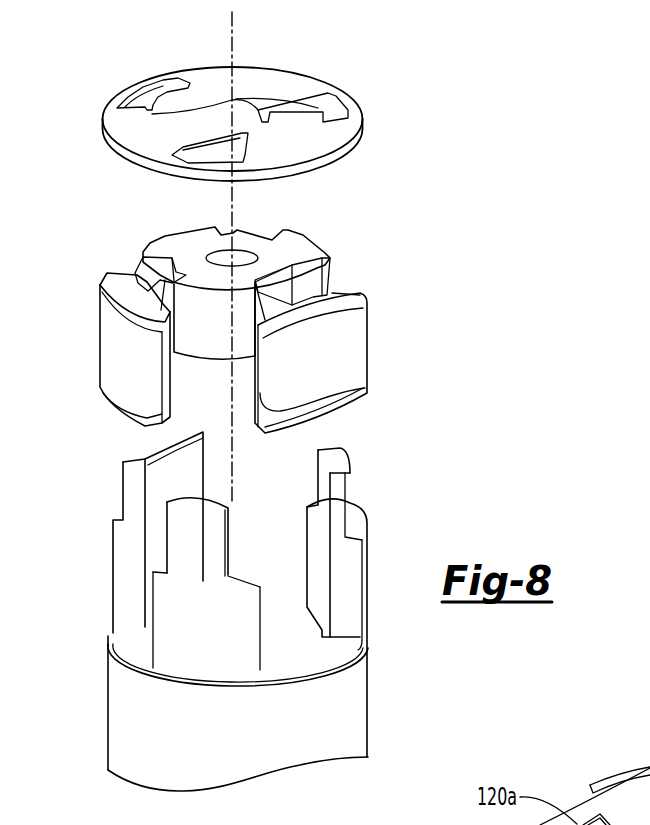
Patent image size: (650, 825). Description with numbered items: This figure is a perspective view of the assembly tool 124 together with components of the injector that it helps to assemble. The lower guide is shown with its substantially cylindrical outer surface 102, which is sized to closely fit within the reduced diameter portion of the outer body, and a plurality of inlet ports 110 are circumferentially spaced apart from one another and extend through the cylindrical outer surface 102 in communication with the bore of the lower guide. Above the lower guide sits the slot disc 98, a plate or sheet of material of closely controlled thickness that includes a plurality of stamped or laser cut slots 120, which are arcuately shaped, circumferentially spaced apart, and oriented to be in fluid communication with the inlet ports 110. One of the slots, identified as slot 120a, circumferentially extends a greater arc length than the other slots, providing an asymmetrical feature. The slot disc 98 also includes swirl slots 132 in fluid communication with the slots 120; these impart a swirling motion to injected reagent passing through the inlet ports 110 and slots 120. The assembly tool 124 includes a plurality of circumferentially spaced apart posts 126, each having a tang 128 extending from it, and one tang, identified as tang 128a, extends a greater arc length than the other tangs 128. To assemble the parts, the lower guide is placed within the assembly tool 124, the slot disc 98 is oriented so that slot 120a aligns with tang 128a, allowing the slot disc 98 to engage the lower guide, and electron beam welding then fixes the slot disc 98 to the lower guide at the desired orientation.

The slot disc 98 is at (372, 127).
The slots 120 is at (337, 100).
The slot 120a is at (138, 100).
The swirl slots 132 is at (236, 133).
The cylindrical outer surface 102 is at (372, 317).
The inlet ports 110 is at (365, 388).
The posts 126 is at (372, 519).
The tangs 128 is at (350, 487).
The tang 128a is at (128, 474).
The assembly tool 124 is at (375, 672).